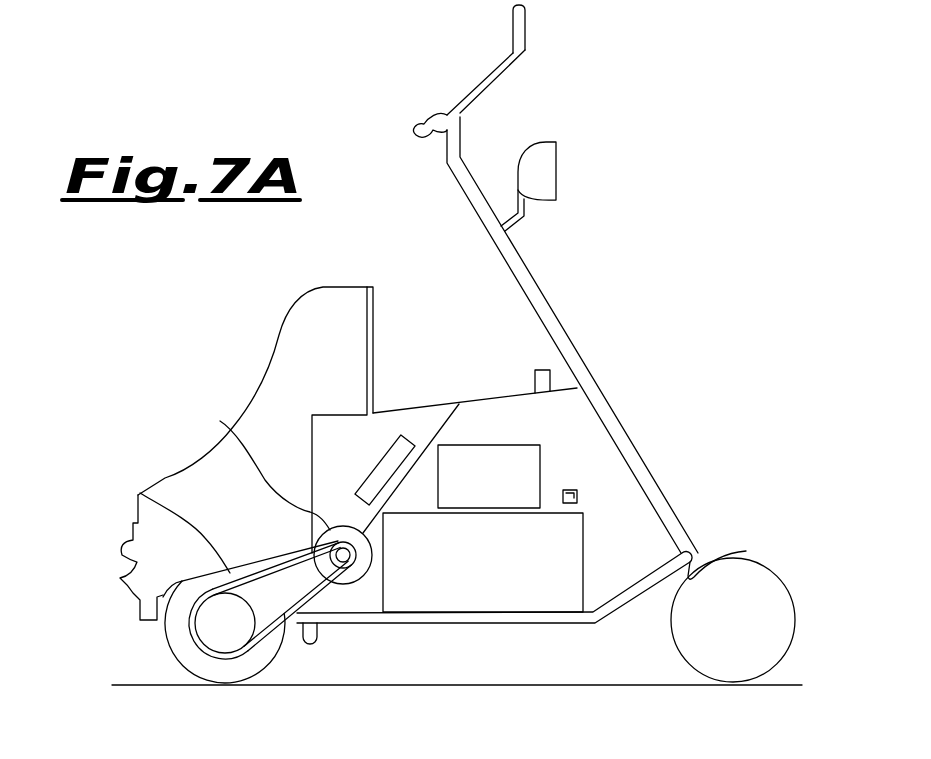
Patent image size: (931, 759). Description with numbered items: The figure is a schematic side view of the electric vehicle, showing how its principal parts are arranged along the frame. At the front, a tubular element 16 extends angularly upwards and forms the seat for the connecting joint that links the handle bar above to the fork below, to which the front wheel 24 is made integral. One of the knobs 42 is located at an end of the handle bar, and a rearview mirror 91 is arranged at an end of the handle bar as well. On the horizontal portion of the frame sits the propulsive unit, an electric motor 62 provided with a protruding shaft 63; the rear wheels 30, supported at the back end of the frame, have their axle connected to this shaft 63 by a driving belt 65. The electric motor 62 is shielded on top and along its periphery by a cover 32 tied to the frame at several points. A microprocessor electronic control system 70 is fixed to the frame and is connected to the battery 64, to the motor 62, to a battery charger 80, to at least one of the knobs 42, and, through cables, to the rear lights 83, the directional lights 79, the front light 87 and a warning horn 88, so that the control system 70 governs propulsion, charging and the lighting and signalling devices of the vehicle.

The tubular element 16 is at (537, 288).
The front wheel 24 is at (767, 572).
The rear wheels 30 is at (200, 672).
The cover 32 is at (500, 410).
The knobs 42 is at (413, 127).
The electric motor 62 is at (255, 462).
The shaft 63 is at (347, 567).
The battery 64 is at (575, 558).
The driving belt 65 is at (140, 493).
The microprocessor electronic control system 70 is at (400, 438).
The directional lights 79 is at (560, 380).
The battery charger 80 is at (540, 446).
The rear lights 83 is at (120, 580).
The front light 87 is at (556, 170).
The warning horn 88 is at (578, 492).
The rearview mirror 91 is at (527, 26).